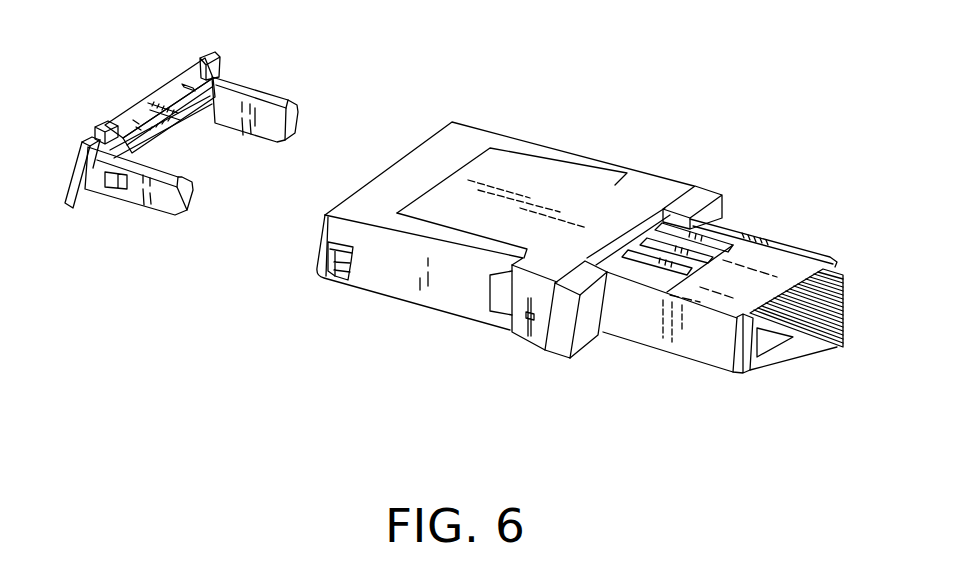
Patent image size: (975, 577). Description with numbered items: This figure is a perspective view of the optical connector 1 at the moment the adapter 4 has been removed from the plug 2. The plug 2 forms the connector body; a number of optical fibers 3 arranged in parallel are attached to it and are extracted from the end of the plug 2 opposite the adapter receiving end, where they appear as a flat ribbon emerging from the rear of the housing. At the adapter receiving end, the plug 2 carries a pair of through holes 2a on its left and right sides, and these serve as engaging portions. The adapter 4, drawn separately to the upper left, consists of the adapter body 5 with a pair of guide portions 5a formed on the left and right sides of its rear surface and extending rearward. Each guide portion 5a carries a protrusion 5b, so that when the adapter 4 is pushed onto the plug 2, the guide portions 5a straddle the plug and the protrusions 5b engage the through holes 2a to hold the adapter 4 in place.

The optical connector 1 is at (552, 375).
The plug 2 is at (550, 148).
The through holes 2a is at (338, 281).
The optical fibers 3 is at (810, 347).
The adapter 4 is at (140, 100).
The adapter body 5 is at (72, 178).
The guide portions 5a is at (303, 122).
The protrusion 5b is at (123, 188).